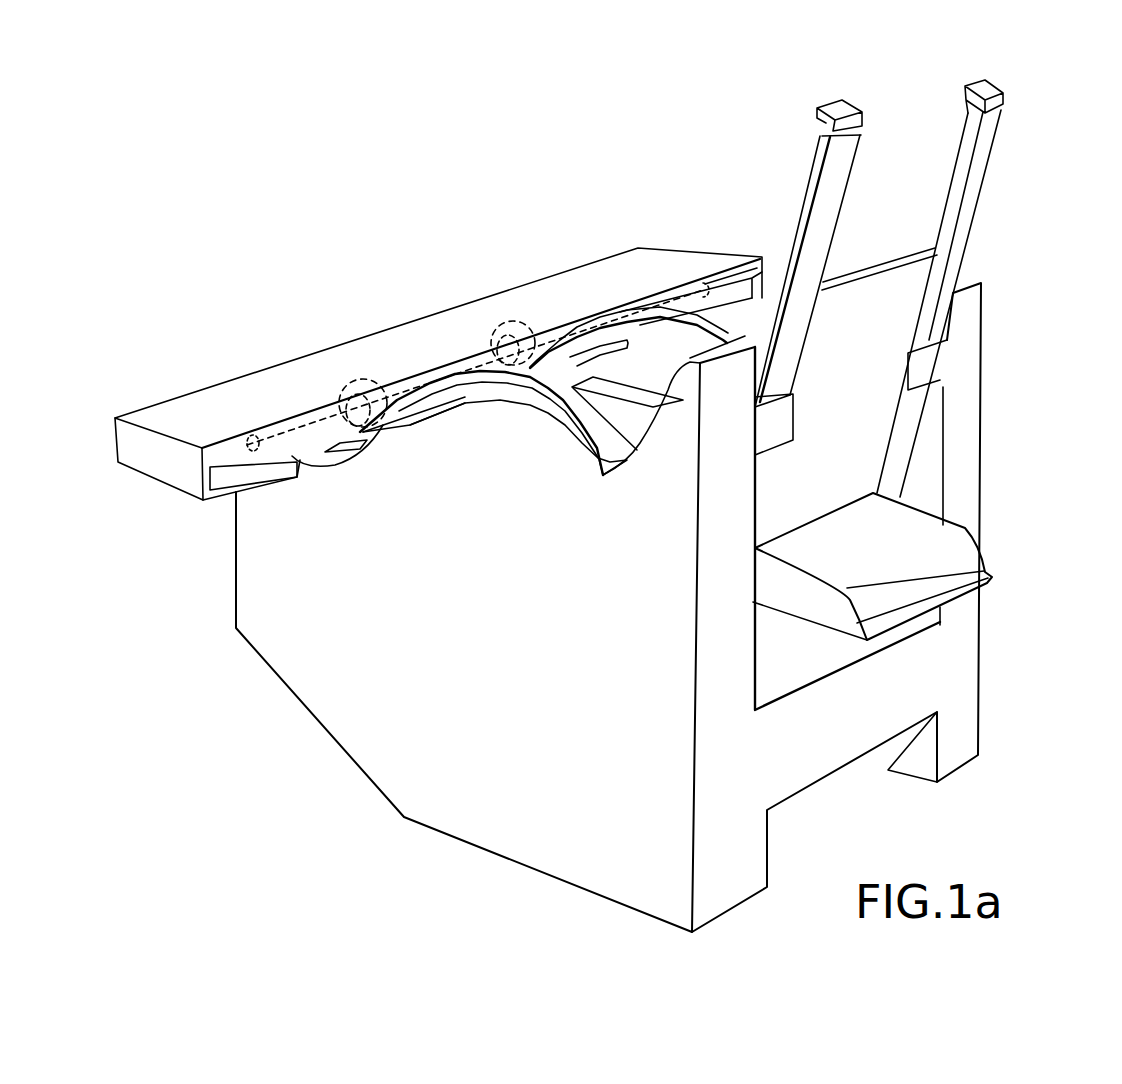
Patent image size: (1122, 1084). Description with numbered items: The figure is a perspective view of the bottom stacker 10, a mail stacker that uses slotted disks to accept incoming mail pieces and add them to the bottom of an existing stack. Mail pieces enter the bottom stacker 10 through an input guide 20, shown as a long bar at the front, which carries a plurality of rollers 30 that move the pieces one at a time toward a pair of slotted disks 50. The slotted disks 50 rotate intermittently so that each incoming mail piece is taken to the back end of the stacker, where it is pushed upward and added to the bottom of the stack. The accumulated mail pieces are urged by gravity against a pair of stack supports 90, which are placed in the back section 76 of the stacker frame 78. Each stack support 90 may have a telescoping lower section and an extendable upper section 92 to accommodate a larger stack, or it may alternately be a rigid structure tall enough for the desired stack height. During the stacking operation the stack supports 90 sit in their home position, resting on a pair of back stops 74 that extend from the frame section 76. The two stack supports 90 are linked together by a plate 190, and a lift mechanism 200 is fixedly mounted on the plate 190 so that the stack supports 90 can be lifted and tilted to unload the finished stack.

The bottom stacker 10 is at (492, 232).
The input guide 20 is at (238, 394).
The rollers 30 is at (373, 373).
The slotted disks 50 is at (653, 330).
The back stops 74 is at (785, 422).
The back section 76 is at (708, 565).
The stacker frame 78 is at (325, 694).
The stack supports 90 is at (842, 168).
The extendable upper section 92 is at (843, 108).
The plate 190 is at (885, 381).
The lift mechanism 200 is at (943, 535).